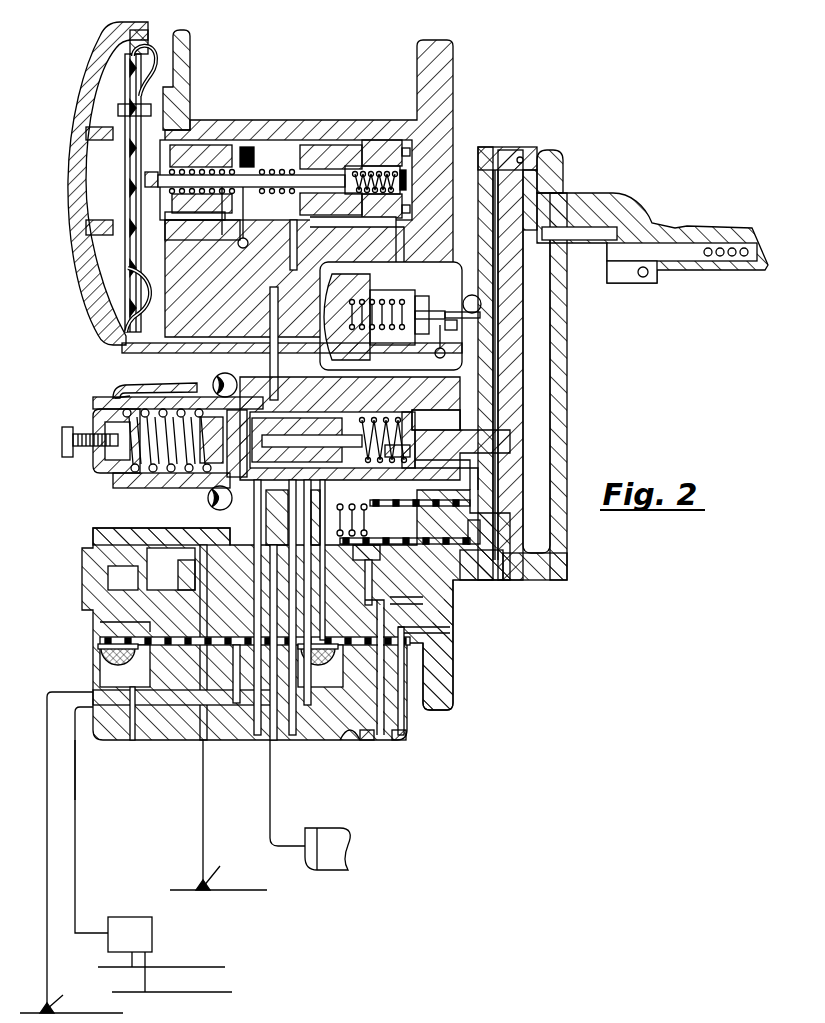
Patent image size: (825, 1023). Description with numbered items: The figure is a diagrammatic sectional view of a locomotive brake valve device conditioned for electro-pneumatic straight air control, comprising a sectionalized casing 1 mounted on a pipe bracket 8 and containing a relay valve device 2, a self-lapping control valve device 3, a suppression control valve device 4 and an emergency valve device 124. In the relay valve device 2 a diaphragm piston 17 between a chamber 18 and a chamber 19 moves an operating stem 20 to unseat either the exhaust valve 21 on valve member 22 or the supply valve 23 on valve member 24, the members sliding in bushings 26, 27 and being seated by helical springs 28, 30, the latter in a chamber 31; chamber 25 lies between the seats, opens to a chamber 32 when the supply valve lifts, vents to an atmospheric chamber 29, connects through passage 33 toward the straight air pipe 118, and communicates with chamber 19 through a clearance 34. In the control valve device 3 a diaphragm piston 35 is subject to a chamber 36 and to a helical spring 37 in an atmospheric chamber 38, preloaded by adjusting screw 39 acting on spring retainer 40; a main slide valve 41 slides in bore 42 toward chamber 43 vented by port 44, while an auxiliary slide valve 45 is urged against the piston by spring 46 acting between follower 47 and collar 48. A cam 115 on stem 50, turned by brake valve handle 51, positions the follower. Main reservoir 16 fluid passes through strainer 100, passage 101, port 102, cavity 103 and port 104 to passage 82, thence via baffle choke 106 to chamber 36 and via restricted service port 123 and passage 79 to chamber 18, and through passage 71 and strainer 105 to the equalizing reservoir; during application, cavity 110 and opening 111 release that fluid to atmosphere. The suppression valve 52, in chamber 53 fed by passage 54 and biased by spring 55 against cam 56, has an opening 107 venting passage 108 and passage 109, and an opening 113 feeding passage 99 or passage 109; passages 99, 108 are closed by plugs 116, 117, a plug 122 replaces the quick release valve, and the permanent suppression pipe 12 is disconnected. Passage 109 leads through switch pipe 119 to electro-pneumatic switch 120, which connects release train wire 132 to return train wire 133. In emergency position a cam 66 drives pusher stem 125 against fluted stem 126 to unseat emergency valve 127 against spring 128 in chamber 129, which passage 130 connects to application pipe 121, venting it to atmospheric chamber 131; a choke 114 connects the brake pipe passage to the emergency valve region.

The sectionalized casing 1 is at (320, 160).
The relay valve device 2 is at (85, 95).
The self-lapping control valve device 3 is at (95, 412).
The suppression control valve device 4 is at (466, 482).
The pipe bracket 8 is at (95, 666).
The permanent suppression pipe 12 is at (292, 145).
The main reservoir 16 is at (330, 827).
The diaphragm piston 17 is at (124, 178).
The chamber 18 is at (112, 280).
The chamber 19 is at (175, 351).
The operating stem 20 is at (290, 185).
The exhaust valve 21 is at (247, 152).
The valve member 22 is at (222, 150).
The supply valve 23 is at (350, 170).
The valve member 24 is at (370, 165).
The chamber 25 is at (268, 168).
The bushing 26 is at (200, 148).
The bushing 27 is at (392, 150).
The helical spring 28 is at (183, 214).
The atmospheric chamber 29 is at (212, 240).
The helical spring 30 is at (402, 165).
The chamber 31 is at (404, 180).
The chamber 32 is at (404, 195).
The passage 33 is at (249, 245).
The groove or clearance 34 is at (226, 214).
The diaphragm piston 35 is at (150, 387).
The chamber 36 is at (205, 497).
The helical spring 37 is at (120, 395).
The atmospheric chamber 38 is at (132, 480).
The adjusting screw 39 is at (64, 442).
The spring retainer 40 is at (110, 405).
The main cylindrical slide valve 41 is at (409, 416).
The bore 42 is at (358, 506).
The chamber 43 is at (490, 393).
The vent port 44 is at (465, 581).
The auxiliary slide valve 45 is at (318, 414).
The helical spring 46 is at (425, 422).
The follower member 47 is at (406, 456).
The collar 48 is at (358, 414).
The stem 50 is at (521, 436).
The brake valve handle 51 is at (720, 229).
The cylindrical valve 52 is at (358, 541).
The chamber 53 is at (372, 561).
The passage 54 is at (322, 592).
The helical bias spring 55 is at (420, 504).
The cam 56 is at (478, 544).
The cam 66 is at (468, 302).
The passage 71 is at (100, 630).
The passage 79 is at (185, 354).
The passage 82 is at (194, 565).
The passage 99 is at (352, 735).
The strainer 100 is at (328, 668).
The passage 101 is at (324, 602).
The port 102 is at (332, 476).
The elongated annular cavity 103 is at (257, 478).
The port 104 is at (292, 478).
The strainer 105 is at (148, 662).
The baffle choke 106 is at (218, 506).
The opening 107 is at (425, 600).
The passage 108 is at (452, 645).
The passage 109 is at (450, 628).
The elongated annular cavity 110 is at (274, 392).
The opening 111 is at (262, 416).
The opening 113 is at (440, 506).
The choke 114 is at (397, 248).
The cam 115 is at (466, 454).
The plug 116 is at (365, 740).
The plug 117 is at (400, 740).
The straight air pipe 118 is at (220, 890).
The electro-pneumatic switch pipe 119 is at (76, 810).
The electro-pneumatic switch 120 is at (127, 917).
The application pipe 121 is at (63, 1013).
The plug 122 is at (235, 668).
The restricted service port 123 is at (130, 564).
The emergency valve device 124 is at (398, 332).
The pusher stem 125 is at (458, 326).
The fluted stem 126 is at (418, 300).
The emergency valve 127 is at (414, 312).
The spring 128 is at (378, 285).
The chamber 129 is at (376, 342).
The passage 130 is at (376, 363).
The atmospheric chamber 131 is at (446, 353).
The release train wire 132 is at (153, 967).
The return train wire 133 is at (180, 992).